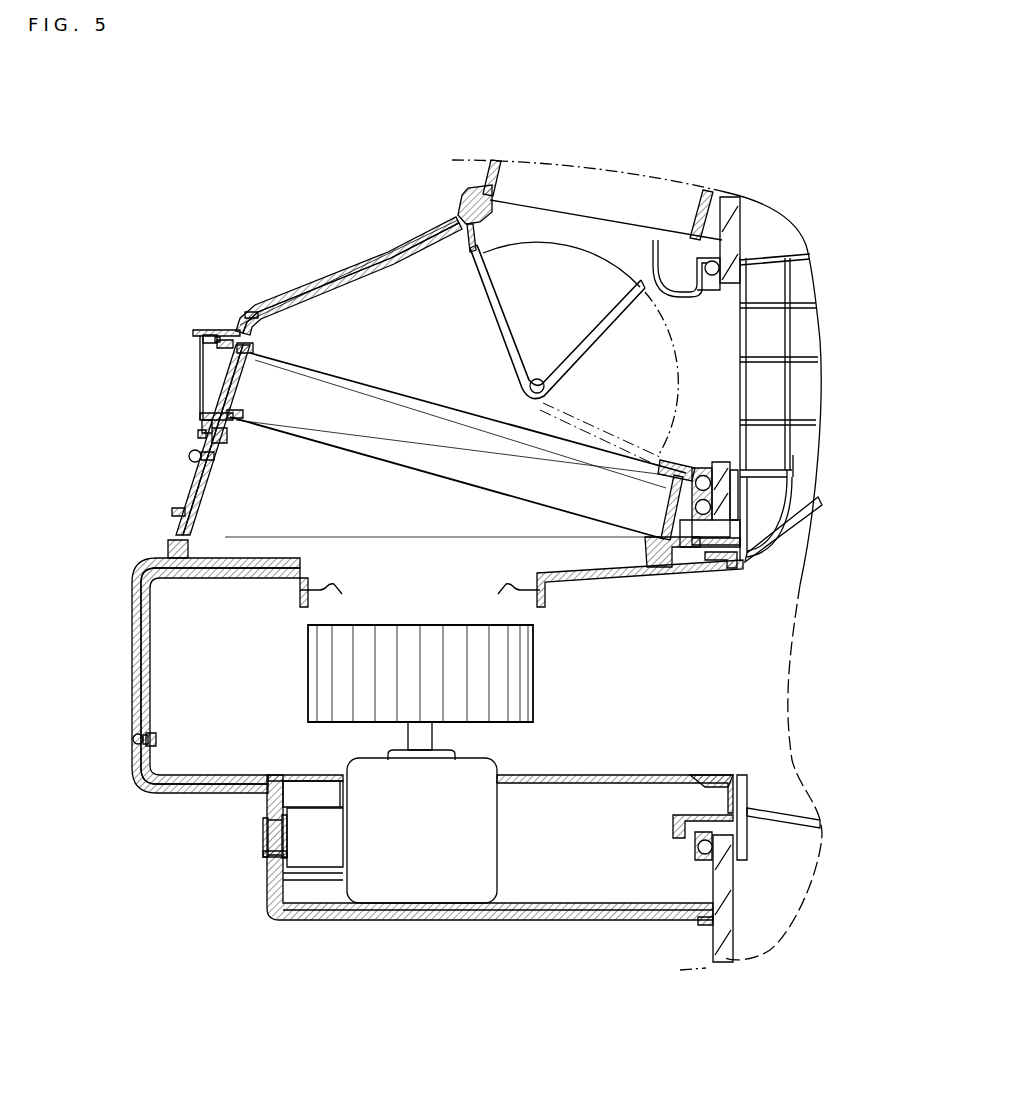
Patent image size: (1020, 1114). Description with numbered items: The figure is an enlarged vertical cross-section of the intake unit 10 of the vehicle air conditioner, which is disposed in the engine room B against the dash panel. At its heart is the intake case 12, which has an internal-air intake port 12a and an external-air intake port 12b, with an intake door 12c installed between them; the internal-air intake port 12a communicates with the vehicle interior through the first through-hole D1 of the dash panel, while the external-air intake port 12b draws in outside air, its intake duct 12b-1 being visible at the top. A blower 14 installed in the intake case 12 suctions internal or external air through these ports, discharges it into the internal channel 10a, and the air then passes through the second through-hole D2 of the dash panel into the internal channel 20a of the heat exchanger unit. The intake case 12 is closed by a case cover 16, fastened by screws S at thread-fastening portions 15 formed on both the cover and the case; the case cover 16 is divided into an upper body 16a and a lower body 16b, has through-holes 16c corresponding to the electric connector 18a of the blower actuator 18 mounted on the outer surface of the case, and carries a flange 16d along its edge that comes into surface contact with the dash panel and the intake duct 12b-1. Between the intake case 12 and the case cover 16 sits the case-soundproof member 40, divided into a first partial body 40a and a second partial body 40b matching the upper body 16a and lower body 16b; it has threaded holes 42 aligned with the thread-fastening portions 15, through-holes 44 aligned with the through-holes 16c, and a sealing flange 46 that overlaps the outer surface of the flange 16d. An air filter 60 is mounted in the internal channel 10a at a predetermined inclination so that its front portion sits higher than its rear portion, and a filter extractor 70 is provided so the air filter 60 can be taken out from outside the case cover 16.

The intake unit 10 is at (573, 800).
The internal channel 10a is at (643, 651).
The intake case 12 is at (358, 295).
The internal-air intake port 12a is at (692, 275).
The external-air intake port 12b is at (568, 236).
The intake duct 12b-1 is at (495, 180).
The intake door 12c is at (592, 278).
The blower 14 is at (518, 707).
The thread-fastening portions 15 is at (255, 310).
The case cover 16 is at (268, 289).
The upper body 16a is at (178, 512).
The lower body 16b is at (172, 545).
The through-holes 16c is at (264, 848).
The flange 16d is at (462, 214).
The blower actuator 18 is at (327, 862).
The electric connector 18a is at (278, 842).
The internal channel 20a is at (747, 651).
The case-soundproof member 40 is at (318, 277).
The first partial body 40a is at (189, 478).
The second partial body 40b is at (132, 650).
The threaded holes 42 is at (230, 355).
The through-holes 44 is at (266, 825).
The sealing flange 46 is at (458, 190).
The air filter 60 is at (430, 415).
The filter extractor 70 is at (203, 388).
The screws S is at (240, 332).
The first through-hole D1 is at (735, 283).
The second through-hole D2 is at (715, 823).
The engine room B is at (272, 98).